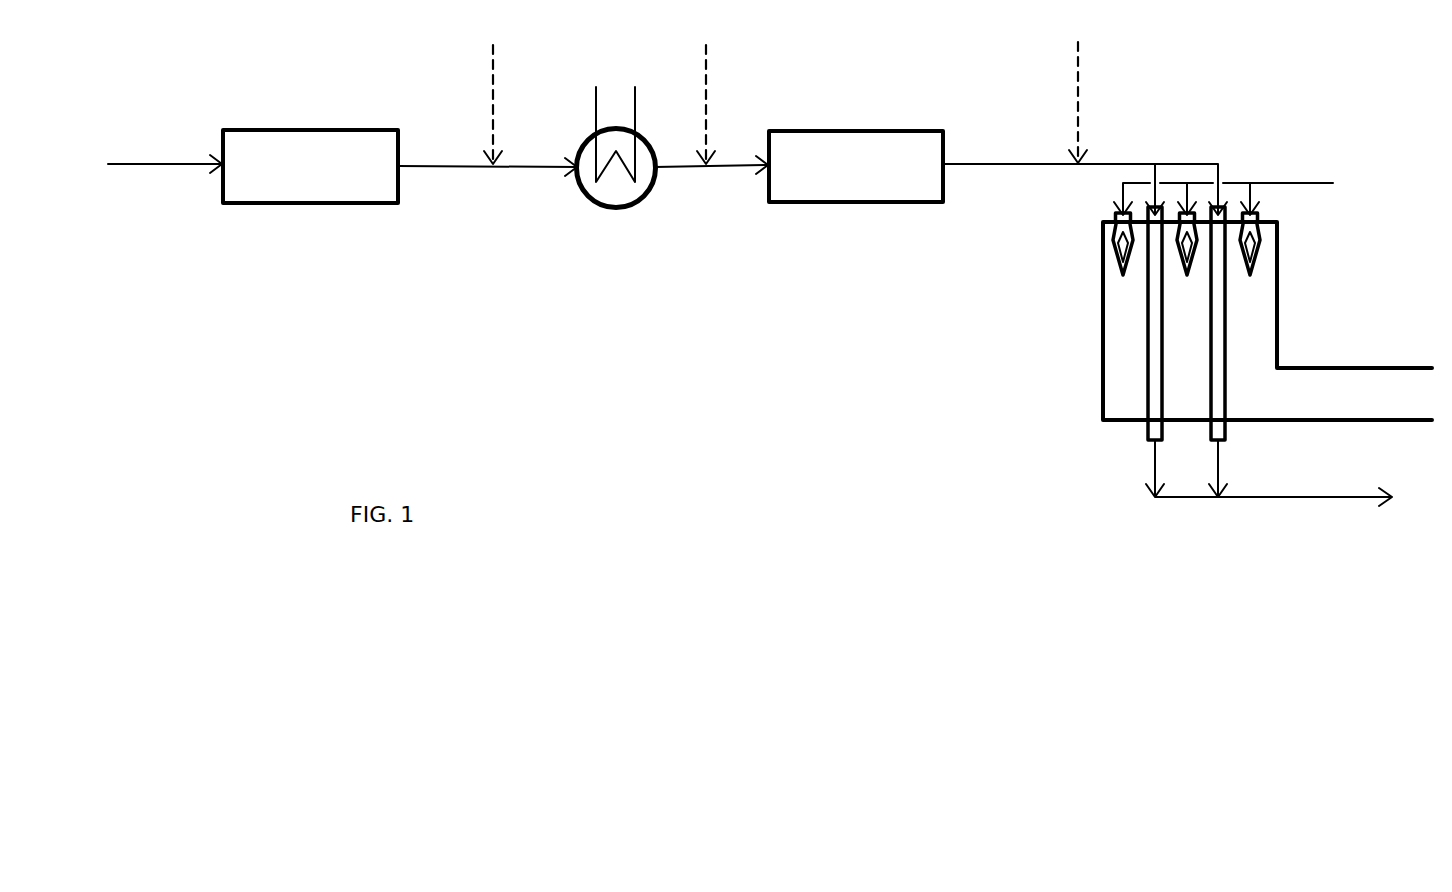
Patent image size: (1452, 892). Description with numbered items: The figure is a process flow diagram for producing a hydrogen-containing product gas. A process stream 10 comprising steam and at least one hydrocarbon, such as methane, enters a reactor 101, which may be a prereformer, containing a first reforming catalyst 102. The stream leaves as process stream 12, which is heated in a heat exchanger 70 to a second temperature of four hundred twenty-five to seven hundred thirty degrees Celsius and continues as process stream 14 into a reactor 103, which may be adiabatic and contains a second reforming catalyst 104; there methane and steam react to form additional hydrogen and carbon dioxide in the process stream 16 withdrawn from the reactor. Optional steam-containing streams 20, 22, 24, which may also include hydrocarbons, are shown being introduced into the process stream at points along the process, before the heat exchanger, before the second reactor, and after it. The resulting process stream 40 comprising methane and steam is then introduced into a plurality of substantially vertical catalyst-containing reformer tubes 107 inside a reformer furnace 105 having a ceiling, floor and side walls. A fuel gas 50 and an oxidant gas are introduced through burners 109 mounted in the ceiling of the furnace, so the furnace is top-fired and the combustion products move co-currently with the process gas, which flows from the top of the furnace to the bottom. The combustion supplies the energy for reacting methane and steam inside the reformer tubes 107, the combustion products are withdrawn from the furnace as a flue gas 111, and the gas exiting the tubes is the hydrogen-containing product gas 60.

The process stream 10 is at (178, 166).
The process stream 12 is at (413, 170).
The process stream 14 is at (672, 168).
The process stream 16 is at (960, 165).
The steam-containing stream 20 is at (494, 98).
The steam-containing stream 22 is at (707, 98).
The steam-containing stream 24 is at (1079, 80).
The process stream 40 is at (1125, 163).
The fuel gas 50 is at (1268, 183).
The hydrogen-containing product gas 60 is at (1270, 497).
The heat exchanger 70 is at (613, 209).
The reactor 101 is at (263, 127).
The reforming catalyst 102 is at (327, 157).
The reactor 103 is at (822, 203).
The reforming catalyst 104 is at (857, 155).
The reformer furnace 105 is at (1103, 282).
The catalyst-containing reformer tubes 107 is at (1153, 317).
The burners 109 is at (1115, 213).
The flue gas 111 is at (1357, 395).